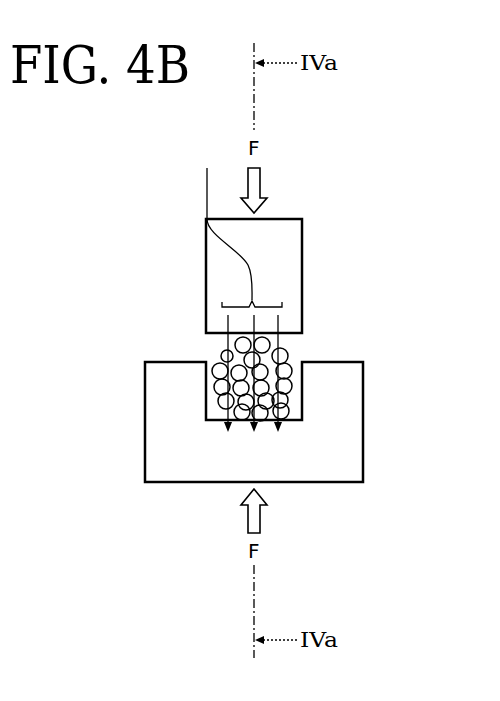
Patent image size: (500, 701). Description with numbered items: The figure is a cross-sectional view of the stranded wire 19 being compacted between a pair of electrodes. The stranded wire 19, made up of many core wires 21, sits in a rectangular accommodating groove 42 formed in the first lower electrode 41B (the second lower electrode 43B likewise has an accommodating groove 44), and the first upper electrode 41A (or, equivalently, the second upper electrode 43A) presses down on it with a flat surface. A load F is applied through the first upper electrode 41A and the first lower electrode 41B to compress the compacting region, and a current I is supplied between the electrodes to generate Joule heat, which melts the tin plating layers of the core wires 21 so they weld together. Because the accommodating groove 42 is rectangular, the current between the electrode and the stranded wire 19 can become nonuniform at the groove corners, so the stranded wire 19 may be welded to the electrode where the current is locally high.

The first upper electrode 41A is at (327, 250).
The second upper electrode 43A is at (302, 265).
The first lower electrode 41B is at (320, 422).
The second lower electrode 43B is at (363, 425).
The stranded wire 19 is at (241, 426).
The core wire 21 is at (222, 352).
The accommodating groove 42 is at (229, 455).
The accommodating groove 44 is at (216, 408).